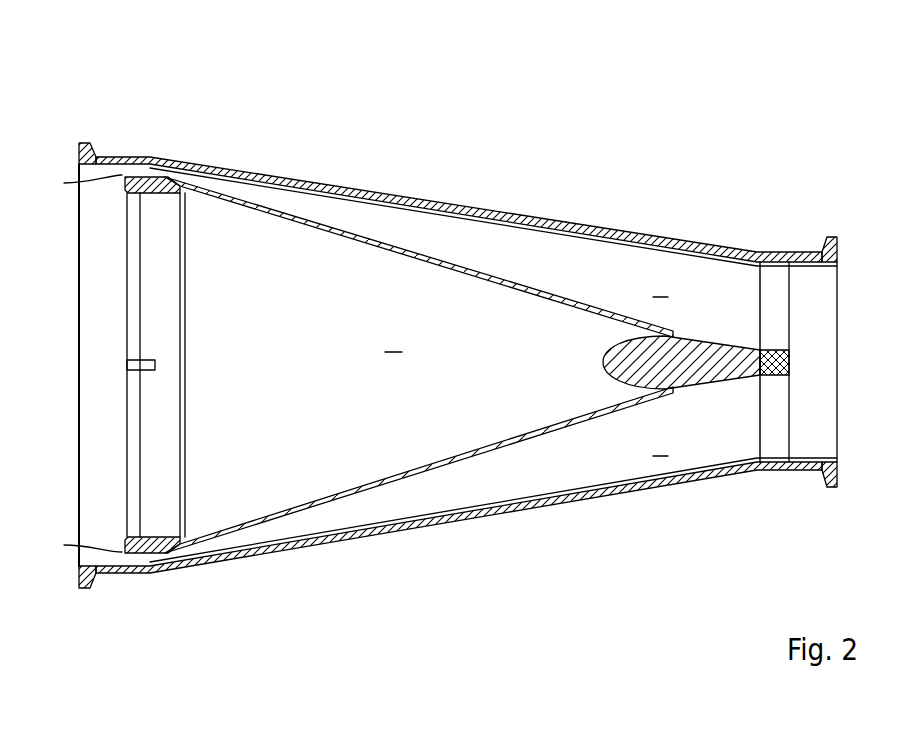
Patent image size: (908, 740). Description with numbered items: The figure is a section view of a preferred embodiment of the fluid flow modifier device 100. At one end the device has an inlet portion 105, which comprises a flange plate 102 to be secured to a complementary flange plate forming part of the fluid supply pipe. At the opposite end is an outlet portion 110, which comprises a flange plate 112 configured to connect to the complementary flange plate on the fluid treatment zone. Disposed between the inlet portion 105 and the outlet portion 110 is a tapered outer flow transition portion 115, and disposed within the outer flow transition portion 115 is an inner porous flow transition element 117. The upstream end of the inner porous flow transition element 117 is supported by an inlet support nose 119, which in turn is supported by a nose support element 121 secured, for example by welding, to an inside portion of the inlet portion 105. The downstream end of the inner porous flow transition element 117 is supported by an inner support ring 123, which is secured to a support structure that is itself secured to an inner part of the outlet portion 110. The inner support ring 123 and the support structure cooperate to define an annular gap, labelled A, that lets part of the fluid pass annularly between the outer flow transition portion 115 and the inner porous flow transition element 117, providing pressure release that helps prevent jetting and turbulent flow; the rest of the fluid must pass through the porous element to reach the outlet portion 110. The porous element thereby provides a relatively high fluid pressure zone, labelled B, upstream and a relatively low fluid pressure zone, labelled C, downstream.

The fluid flow modifier device 100 is at (548, 140).
The flange plate 102 is at (835, 238).
The inlet portion 105 is at (837, 490).
The outlet portion 110 is at (157, 620).
The flange plate 112 is at (84, 141).
The tapered outer flow transition portion 115 is at (511, 512).
The inner porous flow transition element 117 is at (433, 256).
The inlet support nose 119 is at (718, 343).
The nose support element 121 is at (777, 270).
The inner support ring 123 is at (150, 177).